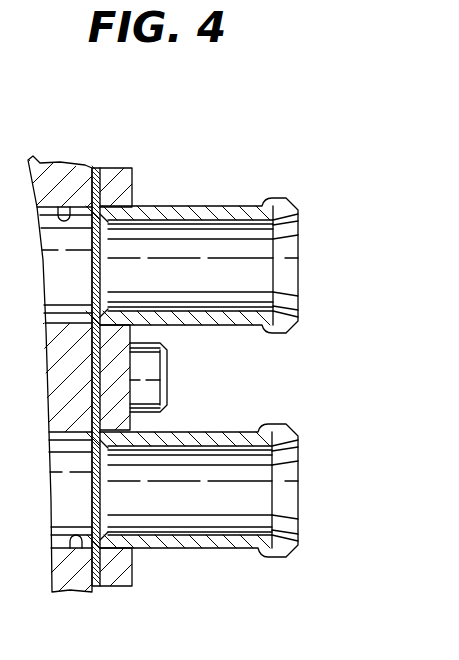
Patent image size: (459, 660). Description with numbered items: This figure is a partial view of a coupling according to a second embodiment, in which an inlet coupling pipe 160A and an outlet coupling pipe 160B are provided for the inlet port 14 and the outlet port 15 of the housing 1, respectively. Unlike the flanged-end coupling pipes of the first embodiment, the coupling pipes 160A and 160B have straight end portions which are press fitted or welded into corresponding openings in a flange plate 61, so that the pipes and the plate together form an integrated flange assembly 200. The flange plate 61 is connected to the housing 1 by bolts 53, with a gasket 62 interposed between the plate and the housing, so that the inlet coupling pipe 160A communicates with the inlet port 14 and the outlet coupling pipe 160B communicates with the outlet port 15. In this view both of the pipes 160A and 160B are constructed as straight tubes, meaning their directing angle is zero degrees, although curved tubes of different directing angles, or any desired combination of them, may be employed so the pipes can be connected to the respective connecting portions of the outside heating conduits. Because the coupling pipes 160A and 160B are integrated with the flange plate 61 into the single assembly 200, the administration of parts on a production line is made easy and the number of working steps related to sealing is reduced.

The housing 1 is at (50, 168).
The inlet port 14 is at (67, 207).
The outlet port 15 is at (79, 549).
The gasket 62 is at (98, 167).
The flange plate 61 is at (110, 580).
The inlet coupling pipe 160A is at (213, 213).
The outlet coupling pipe 160B is at (193, 542).
The bolt 53 is at (152, 372).
The integrated flange assembly 200 is at (296, 146).